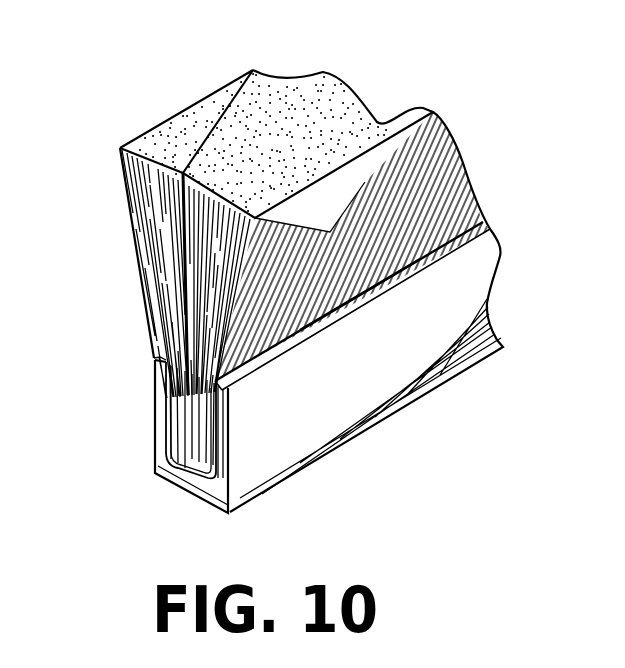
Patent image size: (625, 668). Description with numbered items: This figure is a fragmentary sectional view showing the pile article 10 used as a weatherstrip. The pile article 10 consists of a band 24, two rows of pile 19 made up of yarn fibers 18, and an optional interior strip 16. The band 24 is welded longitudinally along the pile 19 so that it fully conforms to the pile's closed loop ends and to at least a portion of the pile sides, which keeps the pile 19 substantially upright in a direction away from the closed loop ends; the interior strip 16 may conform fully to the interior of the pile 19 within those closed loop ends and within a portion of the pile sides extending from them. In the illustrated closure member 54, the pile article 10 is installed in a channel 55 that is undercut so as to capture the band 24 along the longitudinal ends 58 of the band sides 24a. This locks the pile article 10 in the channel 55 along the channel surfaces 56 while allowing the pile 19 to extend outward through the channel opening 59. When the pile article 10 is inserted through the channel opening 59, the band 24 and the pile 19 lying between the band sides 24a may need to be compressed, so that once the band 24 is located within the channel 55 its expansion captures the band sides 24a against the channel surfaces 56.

The pile article 10 is at (442, 193).
The interior strip 16 is at (187, 470).
The yarn fibers 18 is at (143, 188).
The pile 19 is at (259, 153).
The band 24 is at (178, 465).
The band sides 24a is at (170, 407).
The closure member 54 is at (390, 400).
The channel 55 is at (228, 464).
The channel surfaces 56 is at (163, 355).
The longitudinal ends of band sides 58 is at (157, 365).
The channel opening 59 is at (363, 295).